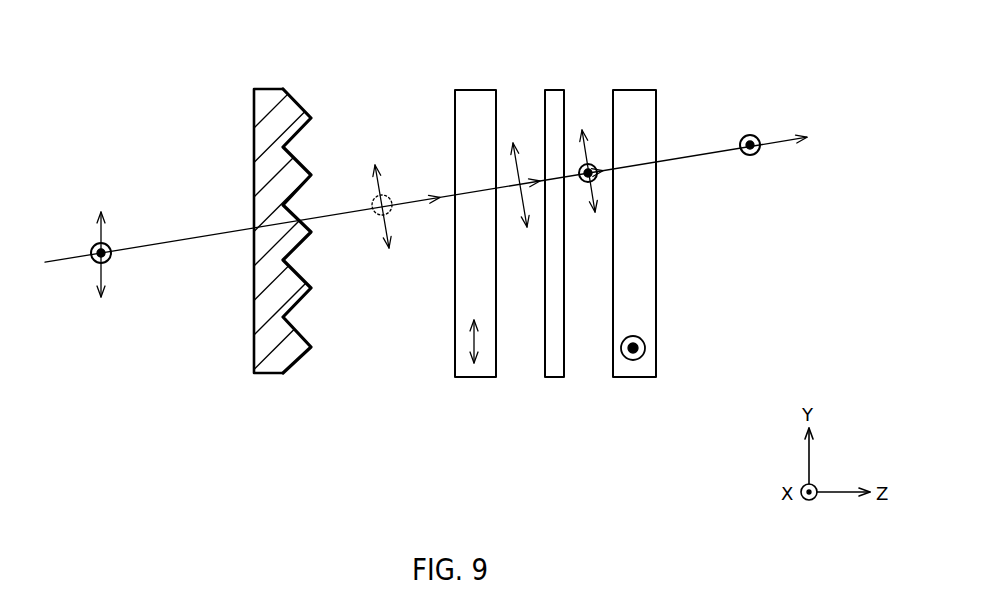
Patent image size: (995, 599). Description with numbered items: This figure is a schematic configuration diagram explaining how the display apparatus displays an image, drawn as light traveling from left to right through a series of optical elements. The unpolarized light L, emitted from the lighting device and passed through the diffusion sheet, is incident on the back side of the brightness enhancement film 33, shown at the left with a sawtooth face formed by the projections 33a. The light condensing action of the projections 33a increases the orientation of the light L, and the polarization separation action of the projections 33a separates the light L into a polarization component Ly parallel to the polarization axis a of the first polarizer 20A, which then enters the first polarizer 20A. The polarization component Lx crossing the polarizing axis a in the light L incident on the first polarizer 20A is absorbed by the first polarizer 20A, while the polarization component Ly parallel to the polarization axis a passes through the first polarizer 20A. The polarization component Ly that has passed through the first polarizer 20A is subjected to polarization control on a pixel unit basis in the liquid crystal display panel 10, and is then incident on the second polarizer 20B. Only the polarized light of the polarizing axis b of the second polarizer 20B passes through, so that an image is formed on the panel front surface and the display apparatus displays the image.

The brightness enhancement film 33 is at (297, 189).
The projections 33a is at (292, 115).
The first polarizer 20A is at (465, 240).
The liquid crystal display panel 10 is at (553, 95).
The second polarizer 20B is at (644, 240).
The unpolarized light L is at (62, 263).
The polarization component crossing the polarizing axis Lx is at (374, 214).
The polarization component parallel to the polarization axis Ly is at (379, 190).
The polarization axis of the first polarizer a is at (474, 343).
The polarizing axis of the second polarizer b is at (646, 348).